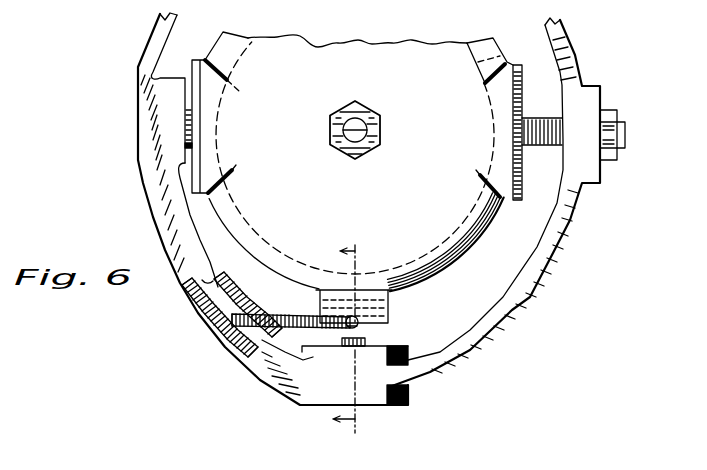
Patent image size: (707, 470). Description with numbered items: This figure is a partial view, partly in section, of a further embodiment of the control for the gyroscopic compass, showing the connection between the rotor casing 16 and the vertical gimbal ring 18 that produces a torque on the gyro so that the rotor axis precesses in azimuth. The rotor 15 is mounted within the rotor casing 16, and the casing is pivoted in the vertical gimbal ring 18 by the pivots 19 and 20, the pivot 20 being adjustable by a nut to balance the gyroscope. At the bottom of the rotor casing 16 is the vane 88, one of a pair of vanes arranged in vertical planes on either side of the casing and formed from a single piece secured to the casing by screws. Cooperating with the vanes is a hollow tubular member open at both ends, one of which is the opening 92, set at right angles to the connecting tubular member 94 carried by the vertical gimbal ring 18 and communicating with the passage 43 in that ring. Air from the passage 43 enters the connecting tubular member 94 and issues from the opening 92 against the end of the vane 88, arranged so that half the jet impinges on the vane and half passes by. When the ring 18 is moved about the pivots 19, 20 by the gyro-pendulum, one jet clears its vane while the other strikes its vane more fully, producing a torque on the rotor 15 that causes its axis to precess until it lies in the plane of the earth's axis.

The rotor 15 is at (497, 56).
The rotor casing 16 is at (453, 262).
The vertical gimbal ring 18 is at (512, 311).
The pivot 19 is at (186, 110).
The pivot 20 is at (541, 147).
The passage 43 is at (233, 323).
The vane 88 is at (390, 316).
The open end 92 is at (362, 328).
The connecting tubular member 94 is at (292, 312).